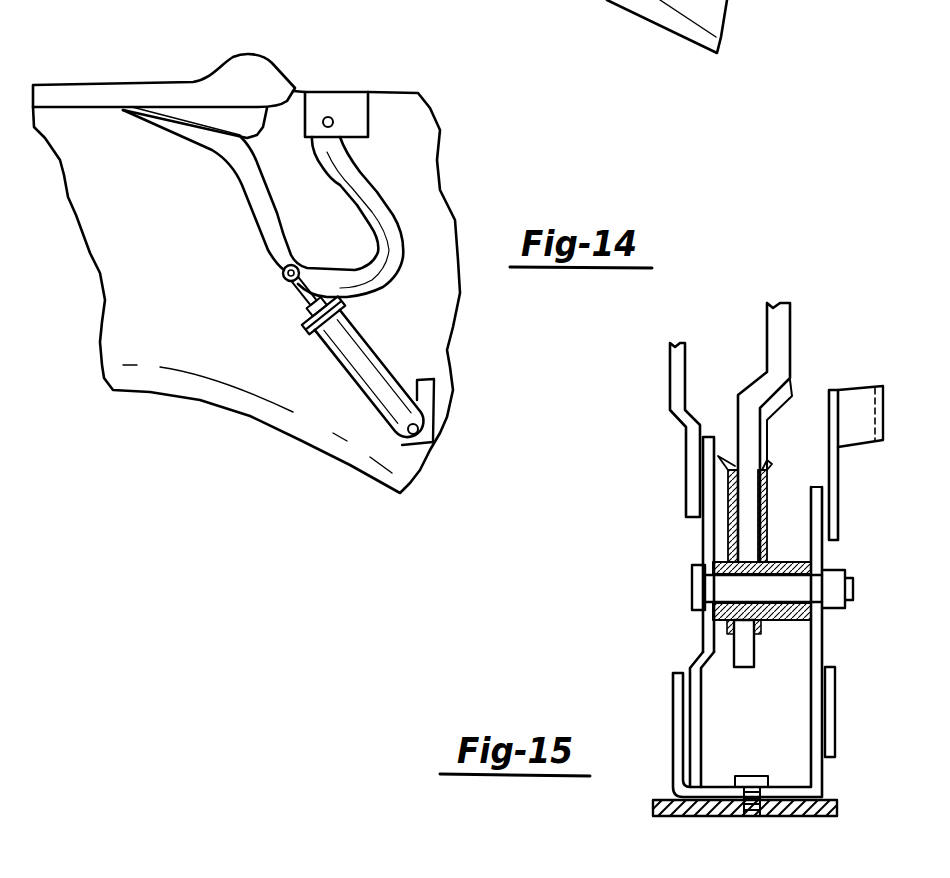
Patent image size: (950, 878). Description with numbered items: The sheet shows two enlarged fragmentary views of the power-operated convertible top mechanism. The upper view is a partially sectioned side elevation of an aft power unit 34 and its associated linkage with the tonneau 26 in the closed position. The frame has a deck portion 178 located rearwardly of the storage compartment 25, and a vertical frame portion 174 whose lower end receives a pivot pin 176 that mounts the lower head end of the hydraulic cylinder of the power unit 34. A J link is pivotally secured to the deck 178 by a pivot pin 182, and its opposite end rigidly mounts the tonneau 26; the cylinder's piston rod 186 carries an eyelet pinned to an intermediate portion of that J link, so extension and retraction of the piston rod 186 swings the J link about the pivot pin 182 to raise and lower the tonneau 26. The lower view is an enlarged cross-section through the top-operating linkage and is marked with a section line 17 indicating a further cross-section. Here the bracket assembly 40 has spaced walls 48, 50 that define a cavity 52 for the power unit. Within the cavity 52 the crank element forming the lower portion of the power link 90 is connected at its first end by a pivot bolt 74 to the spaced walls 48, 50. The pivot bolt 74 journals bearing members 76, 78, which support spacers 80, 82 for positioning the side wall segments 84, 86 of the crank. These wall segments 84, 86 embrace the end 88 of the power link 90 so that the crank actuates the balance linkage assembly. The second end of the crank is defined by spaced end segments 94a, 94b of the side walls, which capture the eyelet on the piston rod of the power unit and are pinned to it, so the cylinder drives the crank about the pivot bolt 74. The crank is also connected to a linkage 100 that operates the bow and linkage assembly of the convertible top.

In FIG. 14, the storage compartment 25 is at (142, 197).
In FIG. 14, the tonneau 26 is at (100, 96).
In FIG. 14, the power unit 34 is at (392, 347).
In FIG. 14, the vertical frame portion 174 is at (426, 392).
In FIG. 14, the pivot pin 176 is at (727, 10).
In FIG. 14, the deck portion 178 is at (343, 110).
In FIG. 14, the pivot pin 182 is at (333, 123).
In FIG. 14, the piston rod 186 is at (327, 290).
In FIG. 15, the bracket assembly 40 is at (667, 710).
In FIG. 15, the wall 48 is at (703, 647).
In FIG. 15, the wall 50 is at (823, 655).
In FIG. 15, the cavity 52 is at (783, 756).
In FIG. 15, the pivot bolt 74 is at (767, 583).
In FIG. 15, the bearing member 76 is at (703, 537).
In FIG. 15, the bearing member 78 is at (840, 577).
In FIG. 15, the spacer 80 is at (812, 590).
In FIG. 15, the spacer 82 is at (720, 615).
In FIG. 15, the side wall segment 84 is at (727, 467).
In FIG. 15, the side wall segment 86 is at (767, 464).
In FIG. 15, the end of power link 88 is at (743, 458).
In FIG. 15, the power link 90 is at (752, 393).
In FIG. 15, the end segment 94a is at (723, 640).
In FIG. 15, the end segment 94b is at (757, 620).
In FIG. 15, the linkage 100 is at (835, 718).
In FIG. 15, the section line 17- 17 is at (652, 630).